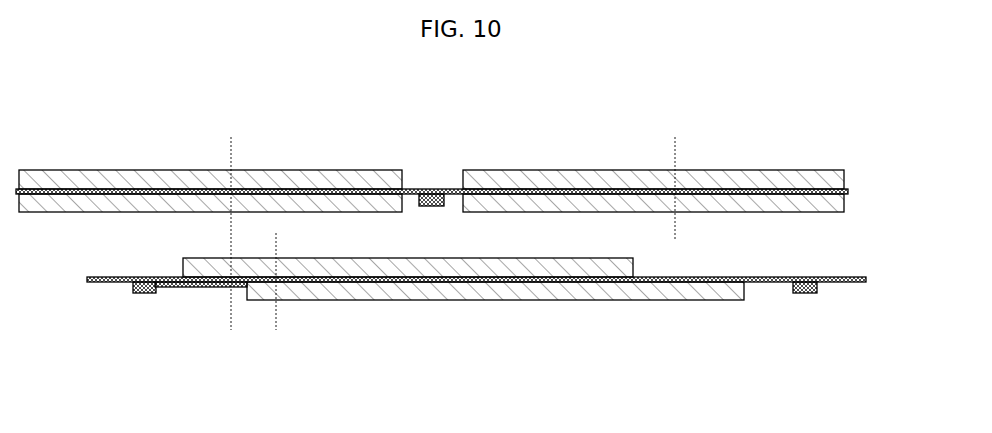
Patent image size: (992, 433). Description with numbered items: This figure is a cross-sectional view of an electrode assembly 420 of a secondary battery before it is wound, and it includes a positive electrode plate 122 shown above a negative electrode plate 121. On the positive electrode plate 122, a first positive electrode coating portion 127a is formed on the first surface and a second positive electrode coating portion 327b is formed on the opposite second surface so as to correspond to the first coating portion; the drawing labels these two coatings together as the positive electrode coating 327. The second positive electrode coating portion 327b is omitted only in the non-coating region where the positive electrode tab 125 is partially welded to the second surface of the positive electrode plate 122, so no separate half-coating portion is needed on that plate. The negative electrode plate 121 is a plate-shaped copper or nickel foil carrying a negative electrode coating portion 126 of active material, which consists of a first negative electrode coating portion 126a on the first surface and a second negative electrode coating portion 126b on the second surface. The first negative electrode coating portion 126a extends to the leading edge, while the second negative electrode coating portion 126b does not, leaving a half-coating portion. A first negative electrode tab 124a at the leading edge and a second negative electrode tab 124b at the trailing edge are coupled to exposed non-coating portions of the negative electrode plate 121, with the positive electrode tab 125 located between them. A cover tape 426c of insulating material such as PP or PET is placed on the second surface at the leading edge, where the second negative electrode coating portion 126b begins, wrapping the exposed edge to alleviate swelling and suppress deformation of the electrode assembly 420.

The electrode assembly 420 is at (886, 140).
The positive electrode plate 122 is at (111, 182).
The input sensing layer / functional layer 327 is at (431, 141).
The first positive electrode coating portion 127a is at (280, 178).
The second positive electrode coating portion 327b is at (354, 204).
The positive electrode tab 125 is at (432, 190).
The negative electrode plate 121 is at (101, 284).
The first negative electrode tab 124a is at (142, 295).
The second negative electrode tab 124b is at (802, 295).
The cover tape 426c is at (207, 289).
The negative electrode coating portion 126 is at (463, 331).
The first negative electrode coating portion 126a is at (573, 272).
The second negative electrode coating portion 126b is at (498, 301).